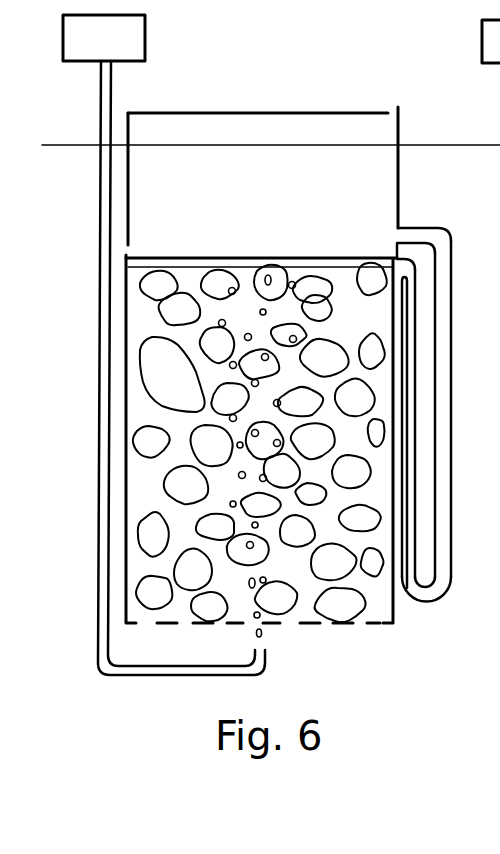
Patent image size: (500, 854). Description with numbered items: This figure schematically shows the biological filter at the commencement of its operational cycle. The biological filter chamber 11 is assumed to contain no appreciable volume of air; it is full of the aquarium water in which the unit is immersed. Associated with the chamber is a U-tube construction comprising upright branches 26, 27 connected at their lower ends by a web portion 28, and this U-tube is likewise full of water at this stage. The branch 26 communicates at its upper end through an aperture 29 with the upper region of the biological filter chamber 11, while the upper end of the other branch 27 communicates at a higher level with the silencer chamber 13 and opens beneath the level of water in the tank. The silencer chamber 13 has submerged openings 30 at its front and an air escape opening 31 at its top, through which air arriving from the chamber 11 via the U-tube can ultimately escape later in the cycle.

The biological filter chamber 11 is at (308, 606).
The silencer chamber 13 is at (263, 133).
The upright branch 26 is at (407, 503).
The upright branch 27 is at (442, 333).
The web portion 28 is at (435, 598).
The aperture 29 is at (398, 235).
The submerged openings 30 is at (123, 246).
The air escape opening 31 is at (393, 107).